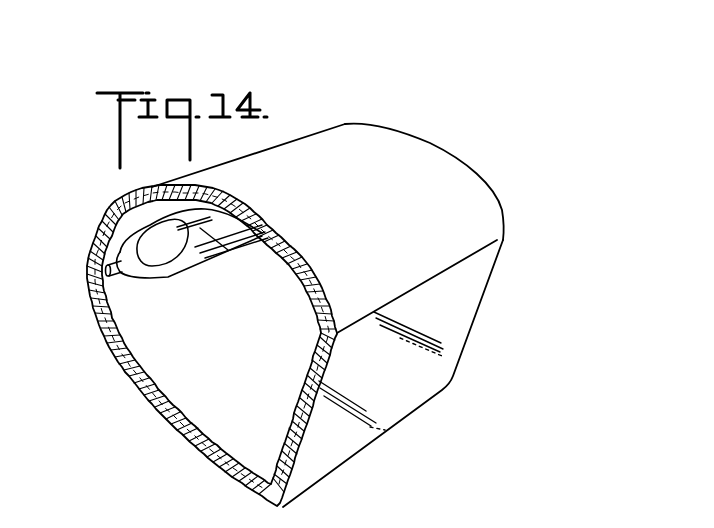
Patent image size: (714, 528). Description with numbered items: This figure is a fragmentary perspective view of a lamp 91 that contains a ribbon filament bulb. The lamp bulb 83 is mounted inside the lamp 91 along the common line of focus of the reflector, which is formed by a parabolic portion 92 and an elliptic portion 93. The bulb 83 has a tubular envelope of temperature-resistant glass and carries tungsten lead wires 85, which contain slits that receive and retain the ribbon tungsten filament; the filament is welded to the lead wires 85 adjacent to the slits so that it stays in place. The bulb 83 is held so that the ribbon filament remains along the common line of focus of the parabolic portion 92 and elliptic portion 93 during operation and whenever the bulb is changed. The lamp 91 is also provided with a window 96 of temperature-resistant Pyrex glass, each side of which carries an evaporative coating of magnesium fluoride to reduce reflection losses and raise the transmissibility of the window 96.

The lamp 91 is at (513, 213).
The window 96 is at (470, 295).
The elliptic portion 93 is at (297, 289).
The parabolic portion 92 is at (193, 412).
The lead wires 85 is at (117, 277).
The lamp bulb 83 is at (238, 259).